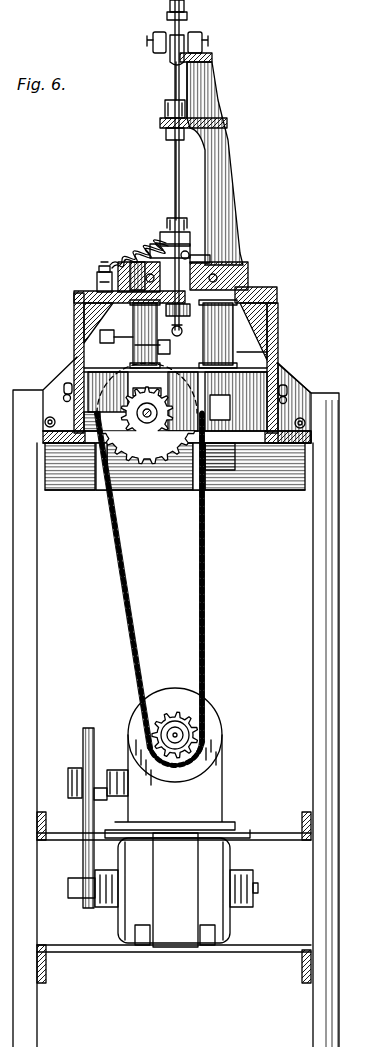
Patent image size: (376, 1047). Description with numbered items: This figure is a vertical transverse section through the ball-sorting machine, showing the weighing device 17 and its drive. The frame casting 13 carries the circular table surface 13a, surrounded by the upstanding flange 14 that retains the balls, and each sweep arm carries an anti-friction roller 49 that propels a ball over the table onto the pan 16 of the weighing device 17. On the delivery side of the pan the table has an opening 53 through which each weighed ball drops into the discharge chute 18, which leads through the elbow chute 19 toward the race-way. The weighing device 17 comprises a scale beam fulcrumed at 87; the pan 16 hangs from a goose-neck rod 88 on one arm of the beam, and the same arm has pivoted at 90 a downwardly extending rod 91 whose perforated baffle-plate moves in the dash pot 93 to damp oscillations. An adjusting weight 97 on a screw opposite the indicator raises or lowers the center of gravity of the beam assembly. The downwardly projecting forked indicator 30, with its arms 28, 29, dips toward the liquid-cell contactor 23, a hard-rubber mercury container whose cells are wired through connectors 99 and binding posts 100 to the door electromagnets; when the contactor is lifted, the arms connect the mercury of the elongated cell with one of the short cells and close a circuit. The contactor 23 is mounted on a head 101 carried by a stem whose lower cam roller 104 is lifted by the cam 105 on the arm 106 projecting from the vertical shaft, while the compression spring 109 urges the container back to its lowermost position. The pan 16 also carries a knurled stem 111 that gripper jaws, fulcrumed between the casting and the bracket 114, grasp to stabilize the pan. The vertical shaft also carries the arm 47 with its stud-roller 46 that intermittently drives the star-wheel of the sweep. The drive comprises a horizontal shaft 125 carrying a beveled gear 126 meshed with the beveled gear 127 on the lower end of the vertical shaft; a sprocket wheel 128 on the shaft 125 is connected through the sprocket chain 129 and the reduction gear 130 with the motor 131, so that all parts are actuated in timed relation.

The casting 13 is at (90, 296).
The table surface 13a is at (135, 262).
The upstanding flange 14 is at (248, 266).
The pan 16 is at (203, 262).
The weighing device 17 is at (218, 150).
The discharge chute 18 is at (240, 352).
The elbow chute 19 is at (235, 460).
The liquid-cell contactor 23 is at (162, 240).
The arm of indicator 28 is at (187, 222).
The arm of indicator 29 is at (165, 222).
The forked indicator 30 is at (175, 166).
The stud-roller 46 is at (270, 362).
The arm 47 is at (200, 342).
The anti-friction roller 49 is at (130, 262).
The opening 53 is at (262, 291).
The fulcrum 87 is at (206, 42).
The goose-neck rod 88 is at (177, 200).
The pivot 90 is at (172, 52).
The rod 91 is at (177, 82).
The dash pot 93 is at (166, 108).
The adjusting weight 97 is at (187, 17).
The connectors 99 is at (115, 245).
The binding posts 100 is at (96, 270).
The head 101 is at (195, 255).
The cam roller 104 is at (185, 330).
The cam 105 is at (100, 333).
The arm 106 is at (125, 345).
The compression spring 109 is at (195, 310).
The knurled stem 111 is at (222, 302).
The bracket 114 is at (76, 311).
The horizontal shaft 125 is at (146, 416).
The beveled gear 126 is at (152, 430).
The beveled gear 127 is at (158, 420).
The sprocket wheel 128 is at (110, 470).
The sprocket chain 129 is at (115, 564).
The reduction gear 130 is at (212, 726).
The motor 131 is at (163, 890).